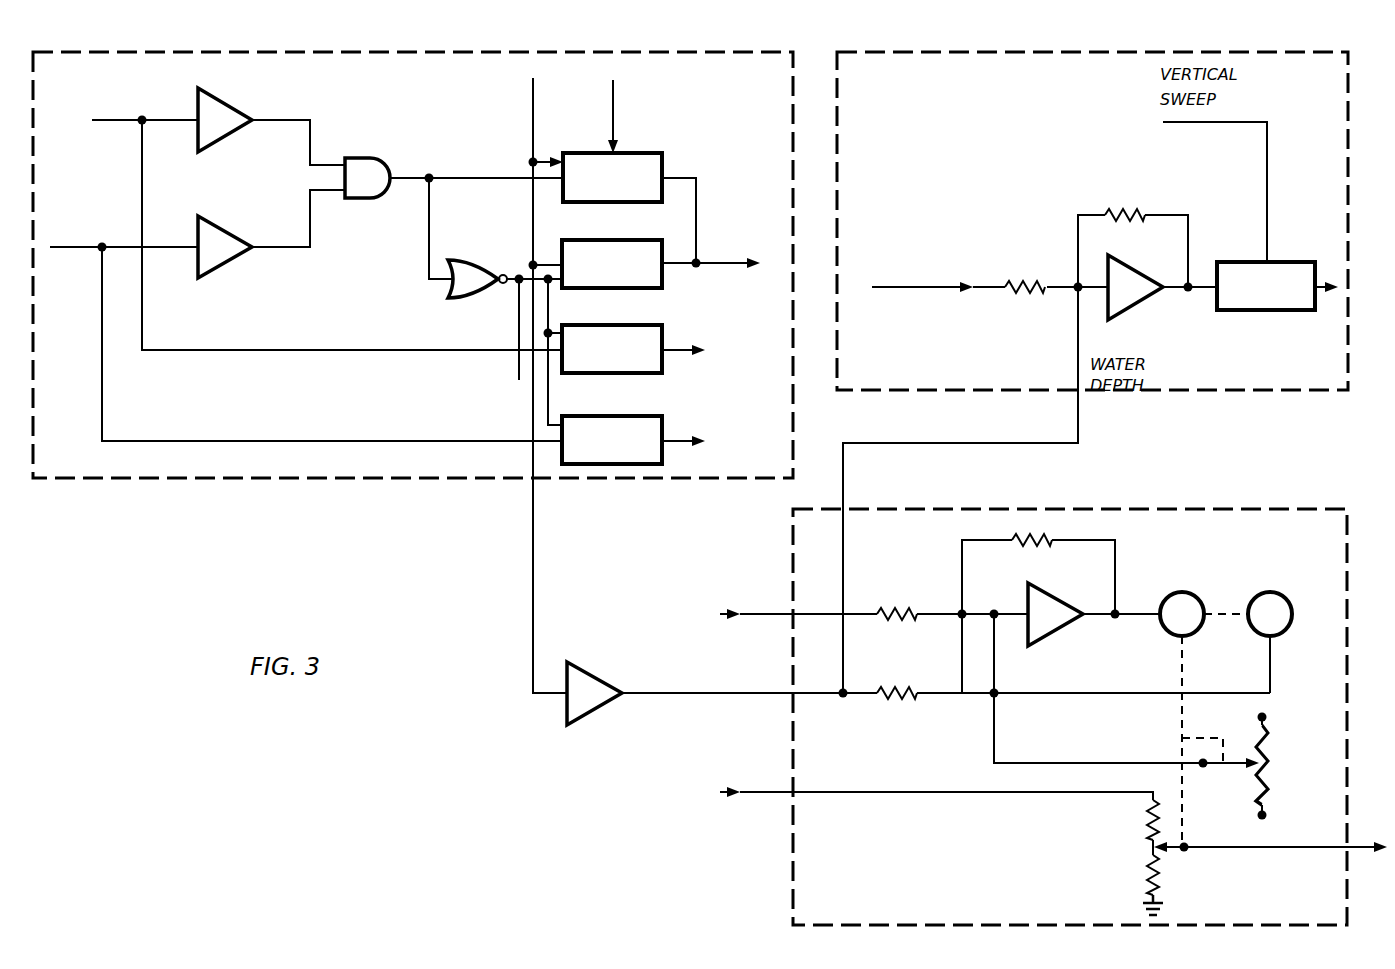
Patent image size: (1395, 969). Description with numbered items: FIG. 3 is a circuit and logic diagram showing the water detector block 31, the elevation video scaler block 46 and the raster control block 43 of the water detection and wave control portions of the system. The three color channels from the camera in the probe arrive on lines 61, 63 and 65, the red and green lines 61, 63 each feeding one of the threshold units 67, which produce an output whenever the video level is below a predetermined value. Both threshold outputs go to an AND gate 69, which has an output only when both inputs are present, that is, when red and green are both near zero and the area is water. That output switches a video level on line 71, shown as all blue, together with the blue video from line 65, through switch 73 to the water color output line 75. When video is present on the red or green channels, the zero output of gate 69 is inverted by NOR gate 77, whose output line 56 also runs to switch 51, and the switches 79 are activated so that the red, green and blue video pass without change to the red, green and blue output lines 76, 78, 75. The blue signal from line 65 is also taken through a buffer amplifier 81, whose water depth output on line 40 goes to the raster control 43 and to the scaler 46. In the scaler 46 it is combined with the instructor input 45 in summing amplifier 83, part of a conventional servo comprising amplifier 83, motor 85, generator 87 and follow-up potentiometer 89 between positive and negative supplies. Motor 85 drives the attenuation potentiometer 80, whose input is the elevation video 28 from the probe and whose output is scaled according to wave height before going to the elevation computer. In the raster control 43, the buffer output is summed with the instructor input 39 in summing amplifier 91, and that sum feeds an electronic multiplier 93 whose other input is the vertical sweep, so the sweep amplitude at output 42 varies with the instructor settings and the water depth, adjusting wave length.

The elevation video input 28 is at (727, 793).
The water detector block 31 is at (484, 480).
The instructor input 39 is at (935, 285).
The output line 40 is at (1080, 443).
The raster control output 42 is at (1328, 285).
The raster control block 43 is at (1288, 52).
The instructor input 45 is at (720, 614).
The elevation video scaler block 46 is at (1232, 509).
The switch 51 is at (518, 360).
The NOR gate output line 56 is at (518, 318).
The red video line 61 is at (92, 120).
The green video line 63 is at (88, 249).
The blue video line 65 is at (535, 112).
The threshold units 67 is at (228, 216).
The AND gate 69 is at (368, 158).
The video level line 71 is at (615, 120).
The switch 73 is at (648, 153).
The water color output line 75 is at (710, 263).
The red output line 76 is at (675, 350).
The NOR gate 77 is at (478, 262).
The green output line 78 is at (675, 441).
The switches 79 is at (612, 352).
The attenuation potentiometer 80 is at (1150, 849).
The buffer amplifier 81 is at (560, 722).
The summing amplifier 83 is at (1055, 638).
The motor 85 is at (1177, 592).
The generator 87 is at (1272, 592).
The follow-up potentiometer 89 is at (1274, 765).
The summing amplifier 91 is at (1135, 273).
The electronic multiplier 93 is at (1293, 262).